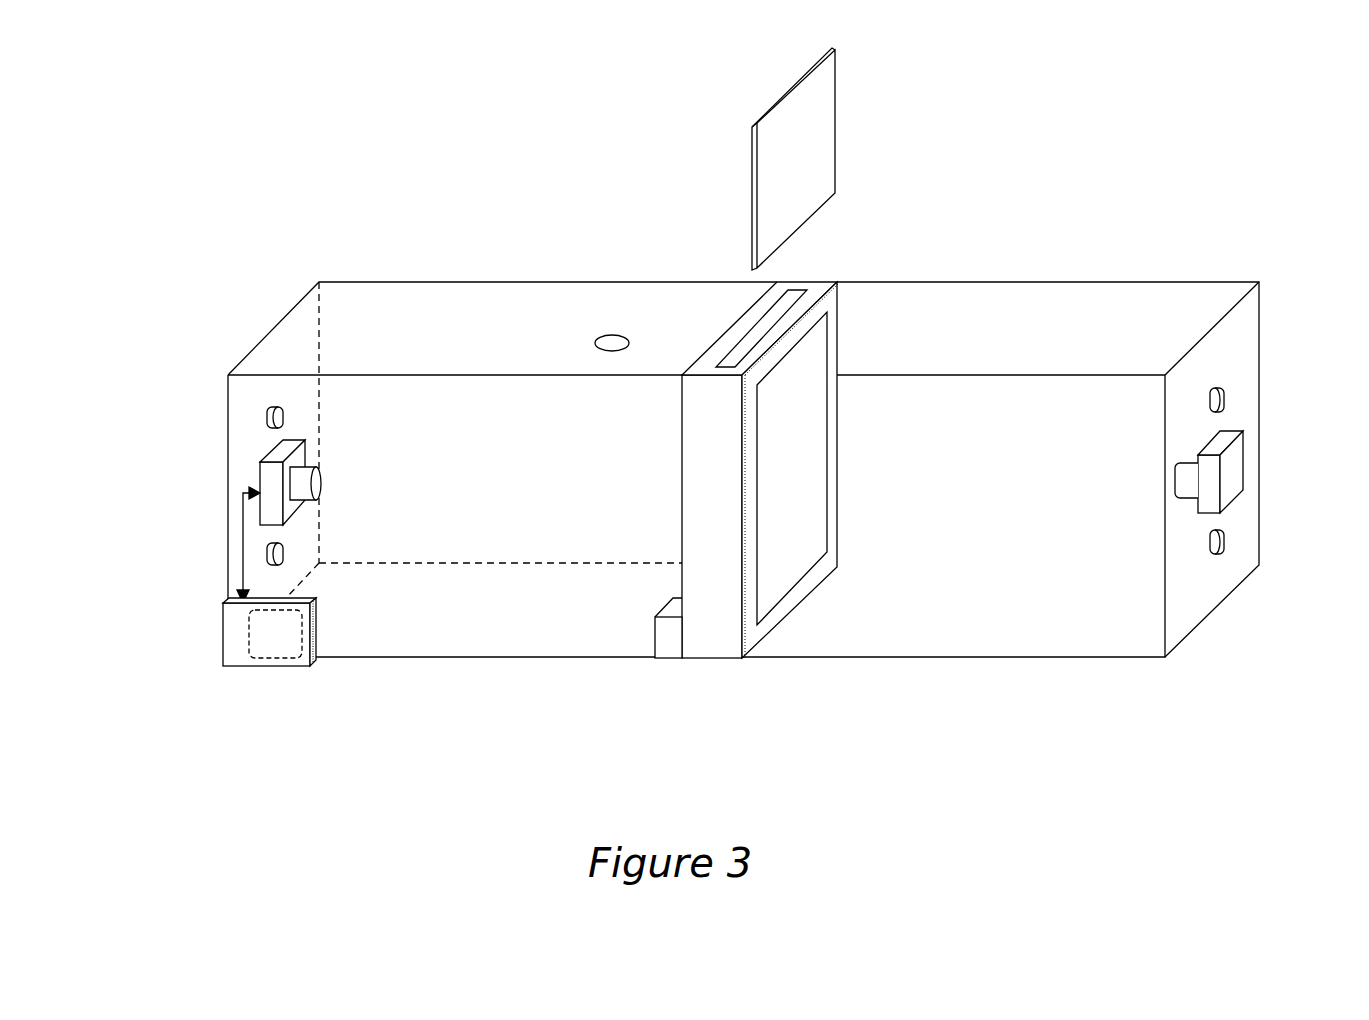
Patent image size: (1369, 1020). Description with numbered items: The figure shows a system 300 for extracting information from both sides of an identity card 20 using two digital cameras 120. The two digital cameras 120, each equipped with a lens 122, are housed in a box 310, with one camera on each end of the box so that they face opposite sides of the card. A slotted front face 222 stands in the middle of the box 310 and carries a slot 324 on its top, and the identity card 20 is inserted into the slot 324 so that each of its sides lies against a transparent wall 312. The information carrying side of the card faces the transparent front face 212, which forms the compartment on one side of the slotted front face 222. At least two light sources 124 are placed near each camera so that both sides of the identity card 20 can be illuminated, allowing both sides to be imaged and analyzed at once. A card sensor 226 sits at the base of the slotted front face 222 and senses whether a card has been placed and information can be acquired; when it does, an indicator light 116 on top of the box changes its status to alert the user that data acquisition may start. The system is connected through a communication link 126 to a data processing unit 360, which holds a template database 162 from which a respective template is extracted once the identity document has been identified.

The system 300 is at (208, 294).
The identity card 20 is at (830, 133).
The indicator light 116 is at (612, 336).
The box 310 is at (1028, 282).
The slot 324 is at (790, 302).
The light sources 124 is at (266, 412).
The digital cameras 120 is at (270, 477).
The lens 122 is at (320, 487).
The communication link 126 is at (245, 538).
The data processing unit 360 is at (240, 640).
The template database 162 is at (274, 659).
The transparent front face 212 is at (680, 503).
The card sensor 226 is at (669, 648).
The slotted front face 222 is at (730, 647).
The transparent wall 312 is at (807, 595).